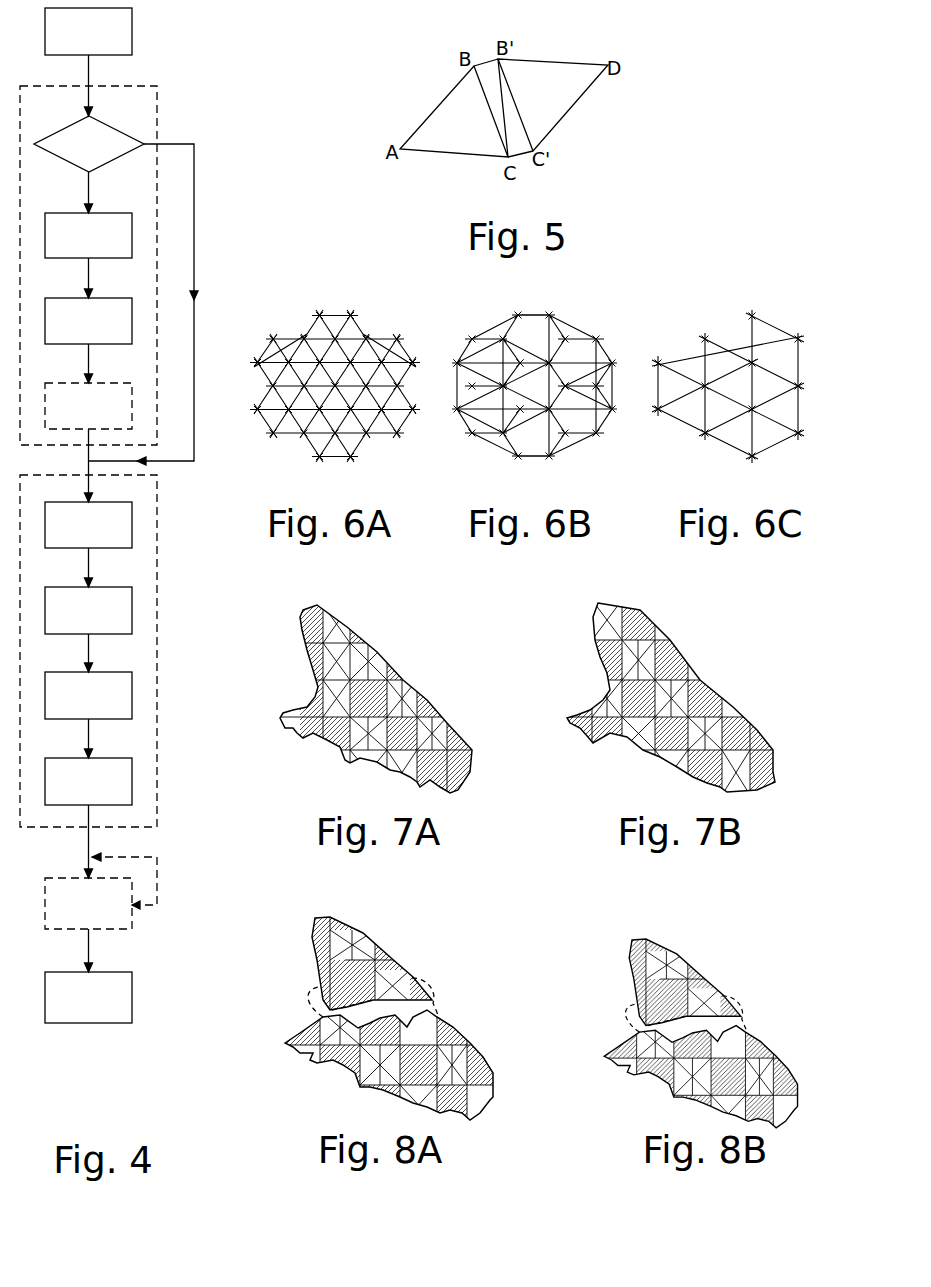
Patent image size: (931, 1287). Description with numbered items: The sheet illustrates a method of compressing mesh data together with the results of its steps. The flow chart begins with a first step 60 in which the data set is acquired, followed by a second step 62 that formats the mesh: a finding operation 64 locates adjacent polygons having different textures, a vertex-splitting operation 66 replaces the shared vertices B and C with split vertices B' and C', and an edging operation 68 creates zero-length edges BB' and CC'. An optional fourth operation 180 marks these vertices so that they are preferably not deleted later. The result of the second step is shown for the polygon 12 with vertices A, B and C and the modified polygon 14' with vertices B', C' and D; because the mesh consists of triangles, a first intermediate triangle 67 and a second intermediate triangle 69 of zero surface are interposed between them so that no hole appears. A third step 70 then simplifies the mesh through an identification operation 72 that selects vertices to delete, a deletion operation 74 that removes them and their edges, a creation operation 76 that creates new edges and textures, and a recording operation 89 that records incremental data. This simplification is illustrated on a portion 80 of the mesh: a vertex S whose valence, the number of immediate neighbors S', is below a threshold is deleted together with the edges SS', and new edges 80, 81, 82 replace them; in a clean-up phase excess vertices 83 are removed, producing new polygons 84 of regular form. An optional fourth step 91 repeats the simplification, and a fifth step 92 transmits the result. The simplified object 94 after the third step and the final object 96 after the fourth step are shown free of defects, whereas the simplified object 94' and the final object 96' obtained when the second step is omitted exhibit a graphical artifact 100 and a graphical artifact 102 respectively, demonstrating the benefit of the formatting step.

In FIG. 4, the first step 60 is at (88, 31).
In FIG. 4, the second step 62 is at (162, 208).
In FIG. 4, the finding operation 64 is at (89, 144).
In FIG. 4, the vertex-splitting operation 66 is at (88, 235).
In FIG. 4, the edging operation 68 is at (88, 321).
In FIG. 4, the fourth operation 180 is at (88, 406).
In FIG. 4, the third step 70 is at (161, 606).
In FIG. 4, the identification operation 72 is at (88, 525).
In FIG. 4, the deletion operation 74 is at (88, 610).
In FIG. 4, the creation operation 76 is at (88, 695).
In FIG. 4, the recording operation 89 is at (88, 781).
In FIG. 4, the fourth step 91 is at (88, 903).
In FIG. 4, the fifth step 92 is at (88, 997).
In FIG. 5, the polygon 12 is at (451, 143).
In FIG. 5, the first intermediate triangle 67 is at (486, 68).
In FIG. 5, the modified polygon 14' is at (563, 105).
In FIG. 5, the second intermediate triangle 69 is at (520, 152).
In FIG. 6A, the vertex S is at (350, 333).
In FIG. 6A, the immediate neighbors S' is at (337, 381).
In FIG. 6B, the portion of the mesh 80 is at (552, 370).
In FIG. 6B, the new edge 81 is at (503, 400).
In FIG. 6B, the new edge 82 is at (522, 361).
In FIG. 6B, the excess vertices 83 is at (518, 357).
In FIG. 6C, the new polygons 84 is at (738, 380).
In FIG. 7A, the simplified object 94 is at (380, 700).
In FIG. 7B, the final object 96 is at (675, 700).
In FIG. 8A, the simplified object 94' is at (390, 1018).
In FIG. 8A, the graphical artifact 100 is at (439, 985).
In FIG. 8B, the final object 96' is at (701, 1029).
In FIG. 8B, the graphical artifact 102 is at (744, 995).